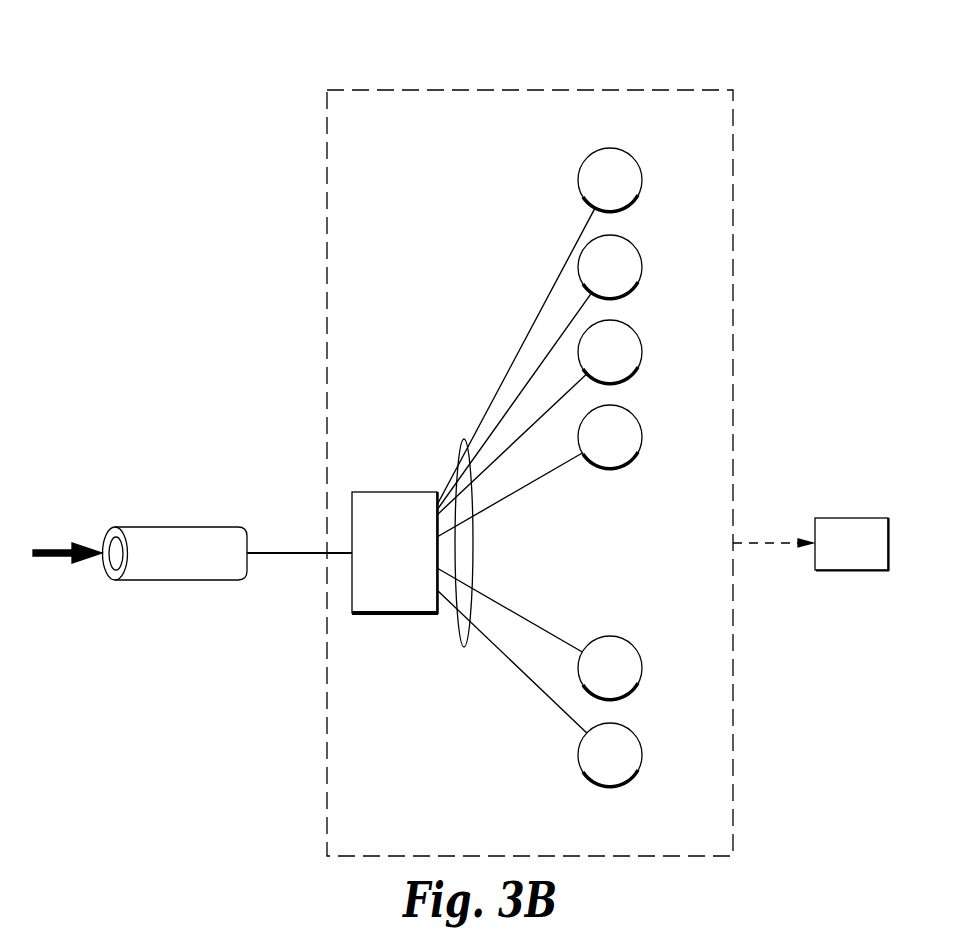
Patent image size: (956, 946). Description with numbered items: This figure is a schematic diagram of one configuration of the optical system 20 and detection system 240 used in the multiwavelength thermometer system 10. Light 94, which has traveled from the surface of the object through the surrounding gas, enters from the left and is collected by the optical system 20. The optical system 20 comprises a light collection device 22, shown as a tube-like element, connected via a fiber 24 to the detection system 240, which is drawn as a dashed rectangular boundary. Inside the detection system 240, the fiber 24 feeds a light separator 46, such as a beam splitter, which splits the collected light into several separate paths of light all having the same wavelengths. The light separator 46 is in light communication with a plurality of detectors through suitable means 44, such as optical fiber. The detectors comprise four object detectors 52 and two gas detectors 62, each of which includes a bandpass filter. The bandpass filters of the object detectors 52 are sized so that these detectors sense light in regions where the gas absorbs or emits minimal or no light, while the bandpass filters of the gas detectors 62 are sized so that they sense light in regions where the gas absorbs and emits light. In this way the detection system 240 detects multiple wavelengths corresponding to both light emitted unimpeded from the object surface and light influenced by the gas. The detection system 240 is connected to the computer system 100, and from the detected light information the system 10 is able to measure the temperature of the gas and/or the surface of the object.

The system 10 is at (199, 87).
The optical system 20 is at (195, 455).
The light collection device 22 is at (139, 527).
The fiber 24 is at (298, 553).
The suitable means (optical fiber) 44 is at (456, 449).
The light separator 46 is at (403, 542).
The object detector 52 is at (641, 176).
The gas detector 62 is at (641, 664).
The light 94 is at (57, 557).
The computer system 100 is at (872, 553).
The detection system 240 is at (606, 90).